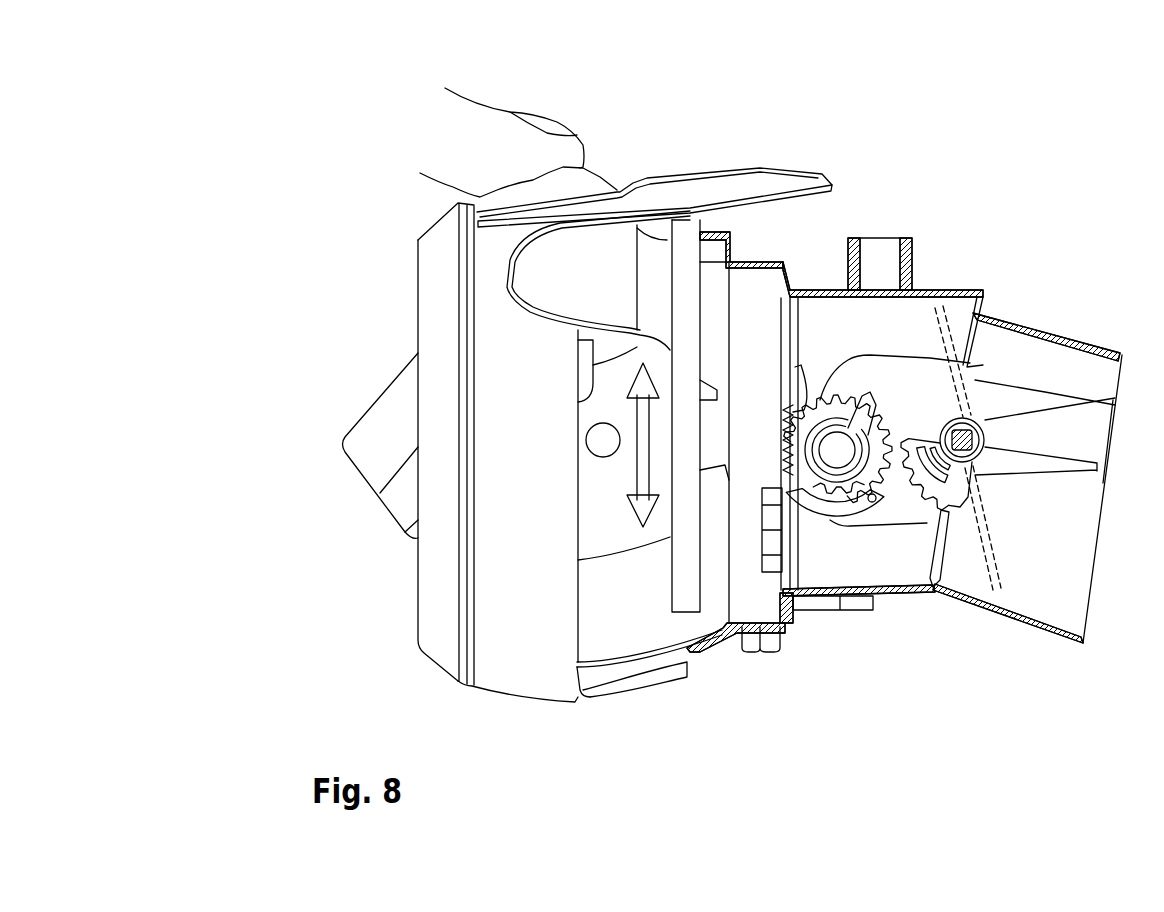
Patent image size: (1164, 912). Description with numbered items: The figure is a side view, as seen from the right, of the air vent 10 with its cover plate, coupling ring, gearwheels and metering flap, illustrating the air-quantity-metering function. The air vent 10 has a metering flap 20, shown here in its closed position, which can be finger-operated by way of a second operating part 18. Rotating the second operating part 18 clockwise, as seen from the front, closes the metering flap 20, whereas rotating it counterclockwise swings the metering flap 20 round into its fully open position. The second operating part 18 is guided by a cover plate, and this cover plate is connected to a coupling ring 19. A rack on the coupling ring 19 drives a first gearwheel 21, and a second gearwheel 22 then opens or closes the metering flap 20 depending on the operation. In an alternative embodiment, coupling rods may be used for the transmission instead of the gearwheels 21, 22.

The air vent 10 is at (350, 101).
The second operating part 18 is at (607, 142).
The coupling ring 19 is at (683, 572).
The metering flap 20 is at (970, 410).
The first gearwheel 21 is at (838, 510).
The second gearwheel 22 is at (957, 473).